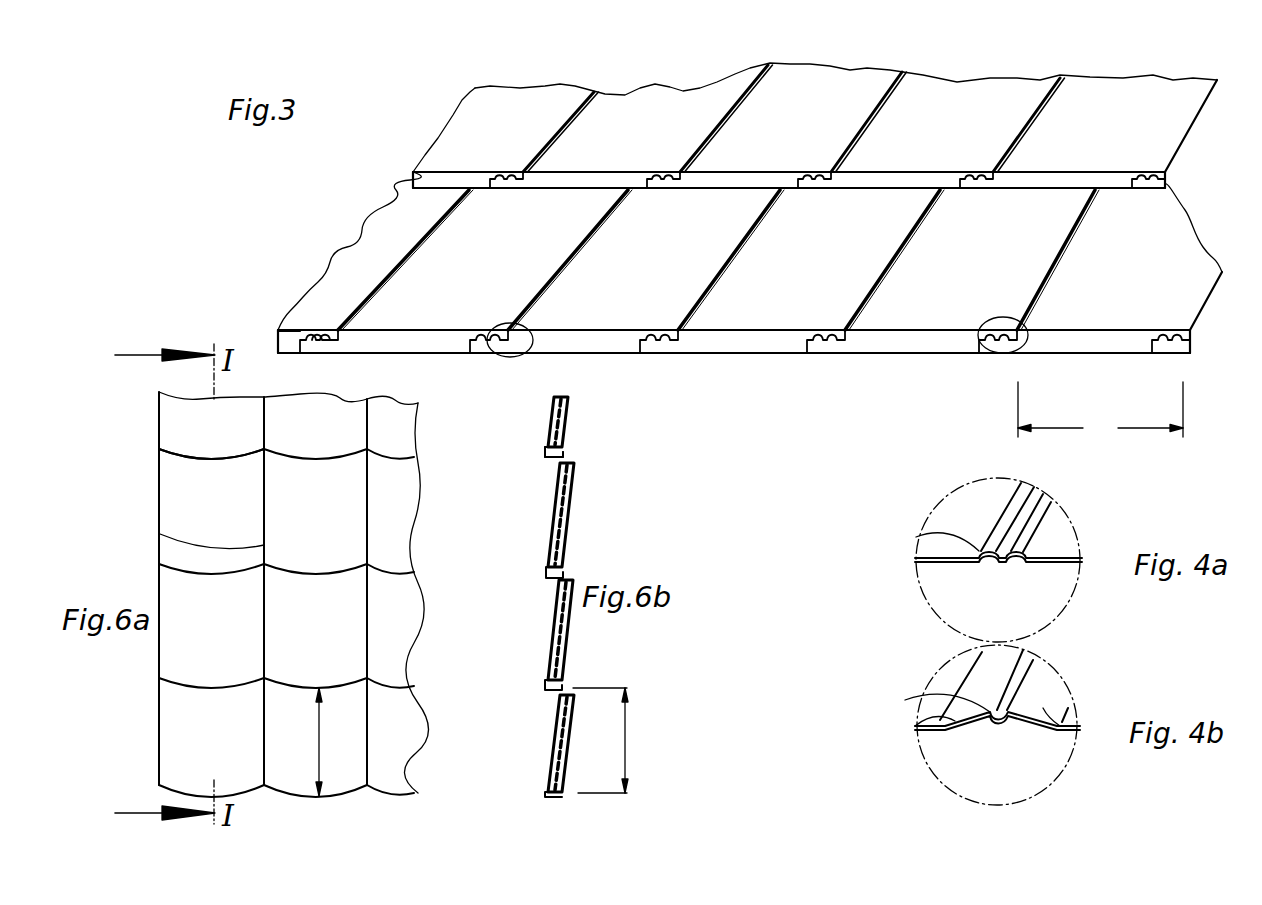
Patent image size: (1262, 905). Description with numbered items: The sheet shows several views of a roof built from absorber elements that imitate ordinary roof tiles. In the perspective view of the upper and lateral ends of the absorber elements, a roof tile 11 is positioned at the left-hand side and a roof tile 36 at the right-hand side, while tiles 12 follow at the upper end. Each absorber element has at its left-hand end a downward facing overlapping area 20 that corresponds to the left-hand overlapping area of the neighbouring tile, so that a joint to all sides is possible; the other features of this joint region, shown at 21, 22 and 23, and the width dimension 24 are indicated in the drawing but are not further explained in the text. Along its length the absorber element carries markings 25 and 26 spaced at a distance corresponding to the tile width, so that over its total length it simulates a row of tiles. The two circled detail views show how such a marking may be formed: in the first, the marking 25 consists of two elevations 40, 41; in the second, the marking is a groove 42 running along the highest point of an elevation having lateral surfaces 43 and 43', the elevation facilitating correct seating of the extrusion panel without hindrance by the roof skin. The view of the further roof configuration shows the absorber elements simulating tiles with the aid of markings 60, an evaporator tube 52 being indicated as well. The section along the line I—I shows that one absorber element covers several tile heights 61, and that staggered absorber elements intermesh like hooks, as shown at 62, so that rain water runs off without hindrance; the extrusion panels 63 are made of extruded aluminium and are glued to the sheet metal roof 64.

In FIG. 3, the roof tile 11 is at (280, 343).
In FIG. 3, the tiles 12 is at (809, 121).
In FIG. 3, the downward facing overlapping area 20 is at (315, 335).
In FIG. 3, the interlocking joint 21 is at (1000, 348).
In FIG. 3, the joint groove 22 is at (326, 347).
In FIG. 3, the upstanding edge flange 23 is at (1028, 333).
In FIG. 3, the panel width 24 is at (1100, 411).
In FIG. 3, the marking 25 is at (592, 238).
In FIG. 3, the marking 26 is at (531, 330).
In FIG. 3, the roof tile 36 is at (1127, 340).
In FIG. 4A, the elevation 40 is at (916, 537).
In FIG. 4A, the elevation 41 is at (1020, 548).
In FIG. 4B, the groove 42 is at (905, 700).
In FIG. 4B, the lateral surface 43 is at (909, 746).
In FIG. 4B, the lateral surface 43' is at (1098, 695).
In FIG. 6A, the evaporator tube 52 is at (187, 425).
In FIG. 6A, the markings 60 is at (180, 537).
In FIG. 6A, the tile heights 61 is at (307, 742).
In FIG. 6B, the tile heights 61 is at (600, 740).
In FIG. 6B, the hook-like intermeshing 62 is at (565, 451).
In FIG. 6B, the extrusion panels 63 is at (571, 645).
In FIG. 6B, the sheet metal roof 64 is at (543, 684).